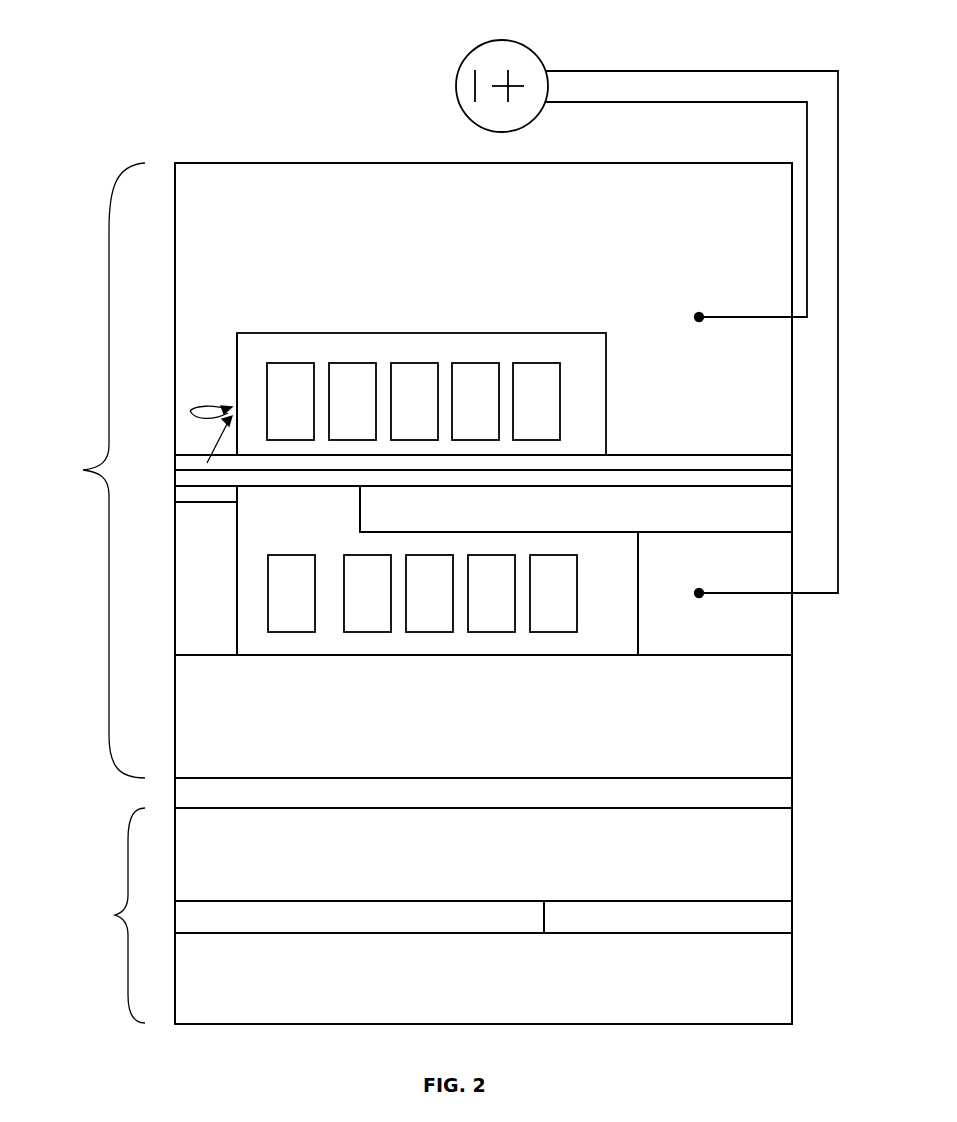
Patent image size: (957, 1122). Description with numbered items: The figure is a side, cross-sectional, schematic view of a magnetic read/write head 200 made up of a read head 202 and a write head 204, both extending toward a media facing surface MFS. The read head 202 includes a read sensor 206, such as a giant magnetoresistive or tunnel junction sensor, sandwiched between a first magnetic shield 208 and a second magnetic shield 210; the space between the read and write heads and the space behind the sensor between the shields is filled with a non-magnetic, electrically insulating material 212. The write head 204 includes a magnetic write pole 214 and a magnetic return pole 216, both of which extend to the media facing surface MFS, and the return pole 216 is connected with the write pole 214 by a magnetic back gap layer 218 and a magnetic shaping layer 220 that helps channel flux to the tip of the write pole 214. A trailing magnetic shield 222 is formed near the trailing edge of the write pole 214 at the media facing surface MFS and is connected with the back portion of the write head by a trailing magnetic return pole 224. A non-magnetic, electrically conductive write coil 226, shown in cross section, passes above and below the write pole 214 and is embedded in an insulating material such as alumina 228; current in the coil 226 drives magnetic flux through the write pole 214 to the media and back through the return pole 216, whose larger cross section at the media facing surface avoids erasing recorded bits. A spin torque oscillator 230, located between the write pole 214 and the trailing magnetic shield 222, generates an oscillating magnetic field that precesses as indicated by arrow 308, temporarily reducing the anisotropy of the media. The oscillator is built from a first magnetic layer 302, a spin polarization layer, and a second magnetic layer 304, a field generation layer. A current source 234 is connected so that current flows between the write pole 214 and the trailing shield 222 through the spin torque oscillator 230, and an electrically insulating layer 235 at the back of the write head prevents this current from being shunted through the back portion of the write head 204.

The magnetic read/write head 200 is at (326, 152).
The read head 202 is at (127, 823).
The write head 204 is at (123, 177).
The read sensor 206 is at (320, 918).
The first magnetic shield 208 is at (395, 980).
The second magnetic shield 210 is at (390, 858).
The non-magnetic, electrically insulating material 212 is at (400, 793).
The magnetic write pole 214 is at (228, 478).
The magnetic return pole 216 is at (398, 718).
The magnetic back gap layer 218 is at (725, 627).
The magnetic shaping layer 220 is at (616, 508).
The trailing magnetic shield 222 is at (207, 363).
The trailing magnetic return pole 224 is at (460, 242).
The write coil 226 is at (548, 568).
The alumina 228 is at (570, 340).
The spin torque oscillator 230 is at (193, 463).
The current source 234 is at (533, 54).
The electrically insulating layer 235 is at (667, 465).
The first magnetic layer 302 is at (195, 543).
The second magnetic layer 304 is at (192, 497).
The arrow 308 is at (190, 411).
The media facing surface MFS is at (175, 187).